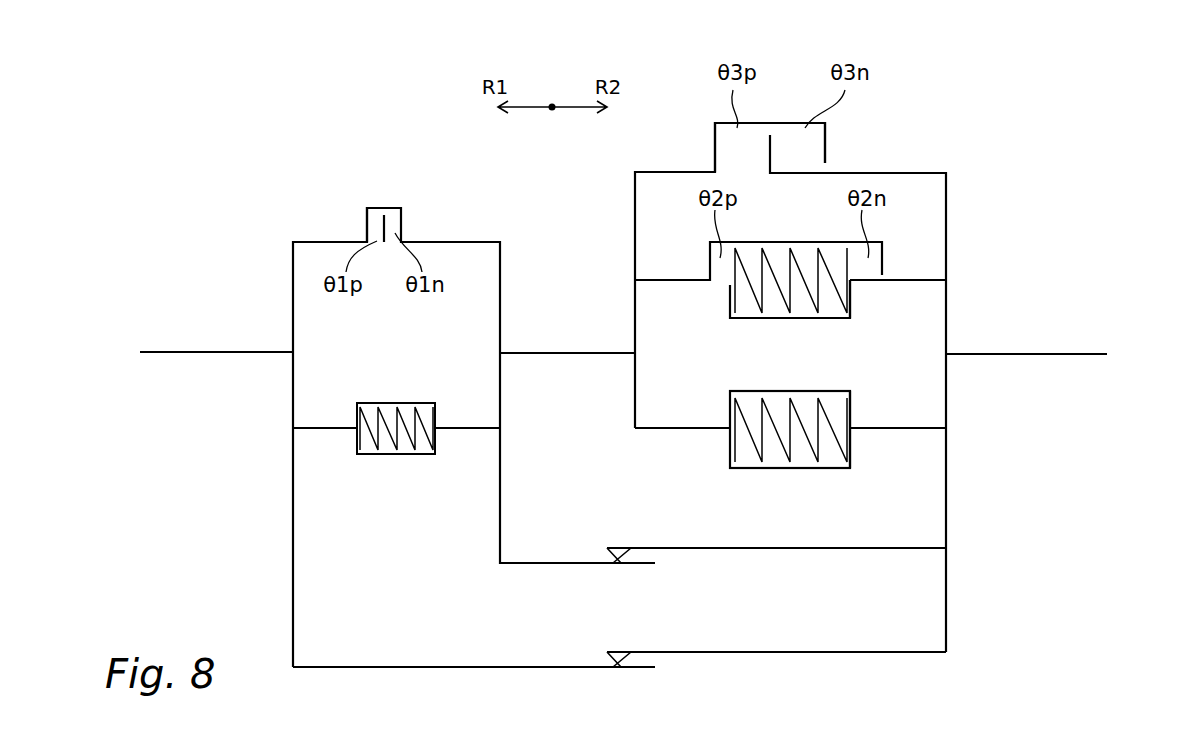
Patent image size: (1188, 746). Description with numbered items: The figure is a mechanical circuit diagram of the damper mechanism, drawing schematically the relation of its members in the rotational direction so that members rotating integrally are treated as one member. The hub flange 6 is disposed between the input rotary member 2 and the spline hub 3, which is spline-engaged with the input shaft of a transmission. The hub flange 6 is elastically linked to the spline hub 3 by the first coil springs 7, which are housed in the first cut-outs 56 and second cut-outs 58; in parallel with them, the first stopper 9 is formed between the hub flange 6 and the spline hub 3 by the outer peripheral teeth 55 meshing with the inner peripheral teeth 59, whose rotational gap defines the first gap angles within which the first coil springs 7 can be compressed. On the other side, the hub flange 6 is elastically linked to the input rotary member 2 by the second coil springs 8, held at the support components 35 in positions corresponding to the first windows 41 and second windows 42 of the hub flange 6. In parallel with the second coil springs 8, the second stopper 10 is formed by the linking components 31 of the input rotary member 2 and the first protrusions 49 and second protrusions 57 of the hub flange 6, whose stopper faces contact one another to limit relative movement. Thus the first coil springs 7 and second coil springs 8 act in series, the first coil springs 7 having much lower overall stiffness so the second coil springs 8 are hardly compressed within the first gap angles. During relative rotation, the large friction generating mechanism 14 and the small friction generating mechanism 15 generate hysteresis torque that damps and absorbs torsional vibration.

The input rotary member 2 is at (1052, 314).
The spline hub 3 is at (216, 340).
The hub flange 6 is at (570, 345).
The first coil spring 7 is at (396, 438).
The second coil spring 8 is at (745, 287).
The first stopper 9 is at (467, 395).
The second stopper 10 is at (778, 95).
The large friction generating mechanism 14 is at (611, 668).
The small friction generating mechanism 15 is at (611, 565).
The linking component 31 is at (784, 156).
The support component 35 is at (858, 305).
The first window 41 is at (710, 255).
The second window 42 is at (710, 402).
The first protrusion 49 is at (726, 267).
The outer peripheral teeth 55 is at (366, 222).
The first cut-out 56 is at (363, 406).
The second protrusion 57 is at (713, 148).
The second cut-out 58 is at (427, 453).
The inner peripheral teeth 59 is at (386, 221).